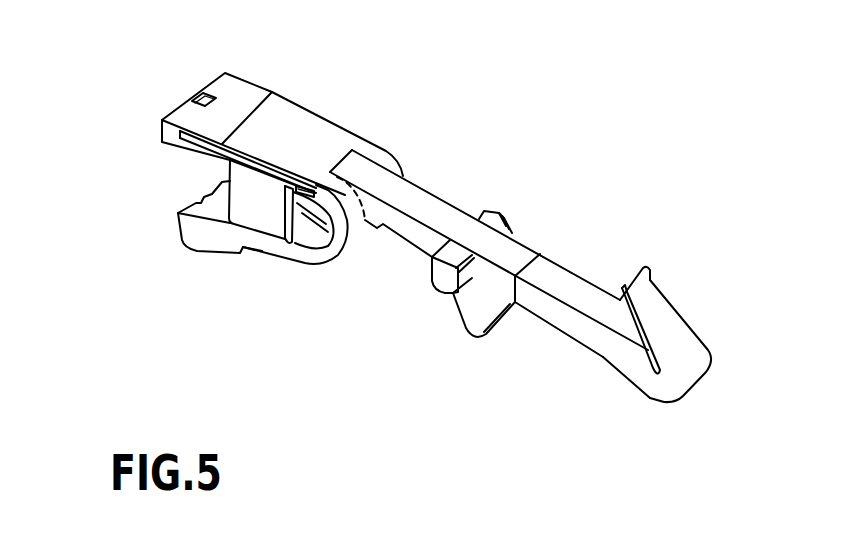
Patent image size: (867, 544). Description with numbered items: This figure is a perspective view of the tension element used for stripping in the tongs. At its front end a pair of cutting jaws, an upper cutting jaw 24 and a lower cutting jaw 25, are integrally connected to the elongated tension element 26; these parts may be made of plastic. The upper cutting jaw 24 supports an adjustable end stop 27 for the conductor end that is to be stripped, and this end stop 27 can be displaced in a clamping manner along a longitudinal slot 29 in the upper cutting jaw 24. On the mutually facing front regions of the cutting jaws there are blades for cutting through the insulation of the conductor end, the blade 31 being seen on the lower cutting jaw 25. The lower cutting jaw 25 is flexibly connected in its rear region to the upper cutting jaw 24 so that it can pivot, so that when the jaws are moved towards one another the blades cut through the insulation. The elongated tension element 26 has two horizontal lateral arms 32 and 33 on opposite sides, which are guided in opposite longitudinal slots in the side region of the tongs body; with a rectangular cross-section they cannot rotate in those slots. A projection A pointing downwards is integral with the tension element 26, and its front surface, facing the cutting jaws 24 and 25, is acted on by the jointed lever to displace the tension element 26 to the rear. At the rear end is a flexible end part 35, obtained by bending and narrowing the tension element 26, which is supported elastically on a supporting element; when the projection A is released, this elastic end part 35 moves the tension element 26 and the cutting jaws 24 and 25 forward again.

The upper cutting jaw 24 is at (297, 122).
The lower cutting jaw 25 is at (197, 238).
The elongated tension element 26 is at (417, 193).
The end stop 27 is at (275, 222).
The longitudinal slot 29 is at (163, 135).
The blade 31 is at (187, 208).
The horizontal lateral arm 32 is at (500, 213).
The horizontal lateral arm 33 is at (436, 277).
The end part 35 is at (660, 304).
The projection A is at (480, 327).